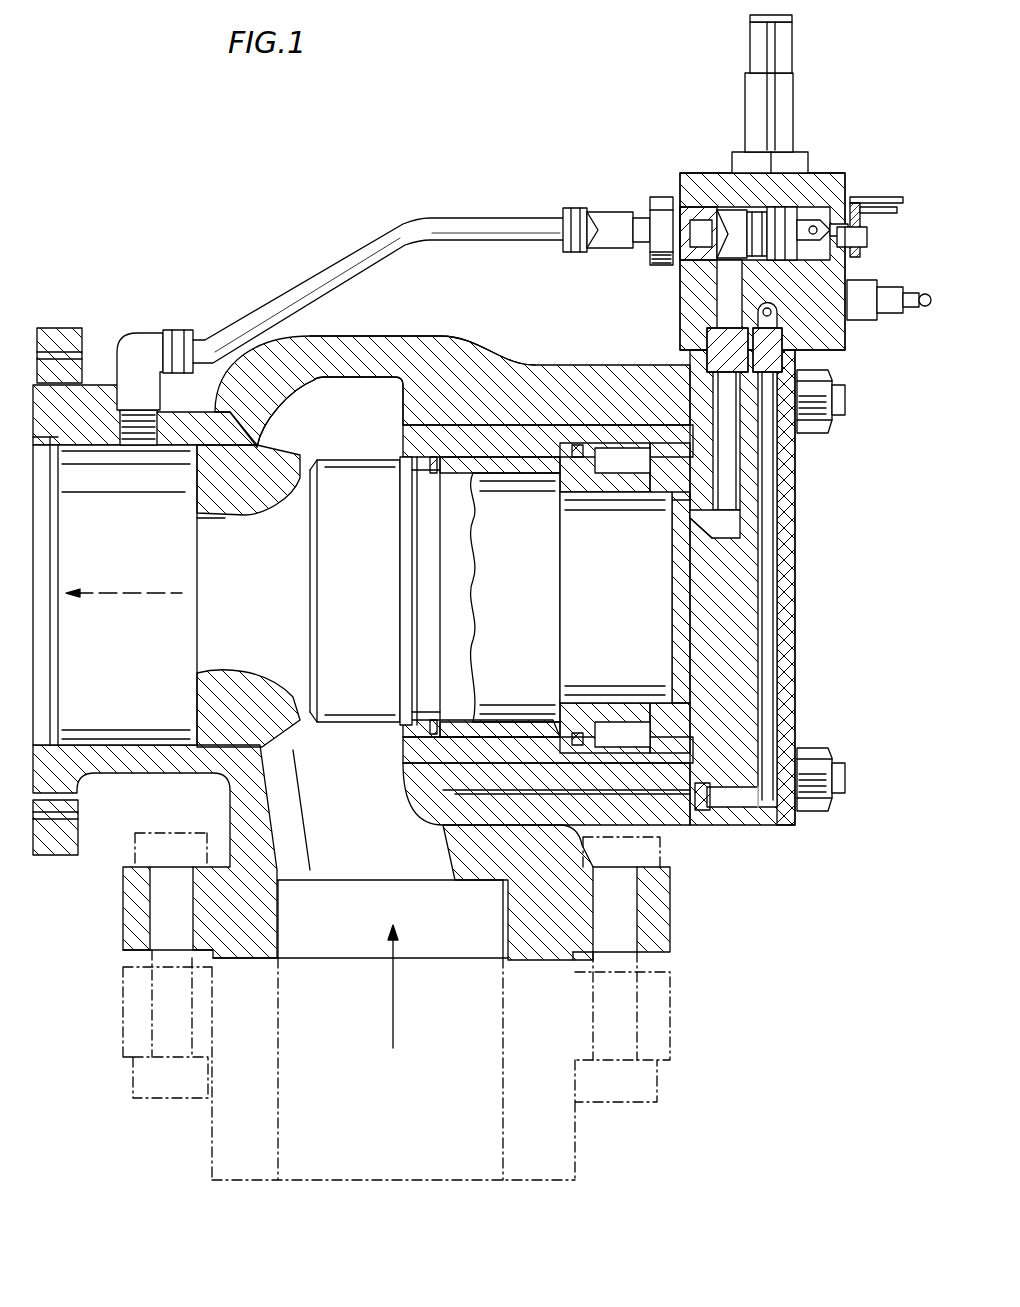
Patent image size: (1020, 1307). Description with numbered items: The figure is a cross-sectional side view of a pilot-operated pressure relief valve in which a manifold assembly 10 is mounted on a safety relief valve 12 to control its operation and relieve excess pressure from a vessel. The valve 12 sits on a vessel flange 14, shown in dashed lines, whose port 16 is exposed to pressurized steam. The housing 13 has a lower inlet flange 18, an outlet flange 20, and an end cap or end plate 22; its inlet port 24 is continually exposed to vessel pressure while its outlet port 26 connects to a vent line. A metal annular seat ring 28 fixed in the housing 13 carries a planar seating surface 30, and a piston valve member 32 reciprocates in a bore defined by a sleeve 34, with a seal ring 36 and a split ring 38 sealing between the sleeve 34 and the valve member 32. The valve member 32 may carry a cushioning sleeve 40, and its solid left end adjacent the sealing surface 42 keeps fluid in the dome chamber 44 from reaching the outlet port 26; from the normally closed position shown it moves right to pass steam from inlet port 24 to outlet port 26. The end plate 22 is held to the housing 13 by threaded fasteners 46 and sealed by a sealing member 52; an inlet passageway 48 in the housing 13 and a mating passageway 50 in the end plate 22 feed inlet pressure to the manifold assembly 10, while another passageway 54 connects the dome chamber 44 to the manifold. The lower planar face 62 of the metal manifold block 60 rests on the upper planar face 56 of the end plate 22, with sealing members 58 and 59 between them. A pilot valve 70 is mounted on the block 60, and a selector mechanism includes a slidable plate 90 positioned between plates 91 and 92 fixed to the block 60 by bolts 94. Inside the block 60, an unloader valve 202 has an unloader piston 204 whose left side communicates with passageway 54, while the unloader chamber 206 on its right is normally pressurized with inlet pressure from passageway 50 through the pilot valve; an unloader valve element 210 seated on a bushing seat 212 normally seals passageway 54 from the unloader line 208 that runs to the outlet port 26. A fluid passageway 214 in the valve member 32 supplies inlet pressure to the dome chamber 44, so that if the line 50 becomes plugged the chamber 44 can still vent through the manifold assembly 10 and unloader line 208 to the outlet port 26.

The manifold assembly 10 is at (851, 153).
The safety relief valve 12 is at (441, 304).
The housing 13 is at (517, 372).
The vessel flange 14 is at (127, 1020).
The port 16 is at (446, 1025).
The lower inlet flange 18 is at (128, 908).
The outlet flange 20 is at (59, 845).
The end cap 22 is at (783, 648).
The inlet port 24 is at (394, 868).
The outlet port 26 is at (132, 561).
The metal annular seat ring 28 is at (247, 690).
The planar seating surface 30 is at (302, 717).
The piston valve member 32 is at (372, 561).
The sleeve 34 is at (480, 435).
The seal ring 36 is at (578, 460).
The split ring 38 is at (430, 453).
The cushioning sleeve 40 is at (660, 717).
The sealing surface 42 is at (298, 567).
The dome chamber 44 is at (634, 613).
The threaded fasteners 46 is at (817, 810).
The inlet passageway 48 is at (655, 800).
The mating passageway 50 is at (767, 572).
The sealing member 52 is at (705, 810).
The passageway 54 is at (732, 490).
The upper planar face 56 is at (697, 333).
The sealing member 58 is at (845, 400).
The sealing member 59 is at (693, 360).
The manifold block 60 is at (683, 273).
The lower planar face 62 is at (843, 353).
The pilot valve 70 is at (788, 92).
The slidable plate 90 is at (878, 197).
The plate 91 is at (848, 250).
The plate 92 is at (882, 214).
The bolts 94 is at (868, 238).
The unloader valve 202 is at (718, 207).
The unloader piston 204 is at (747, 207).
The unloader chamber 206 is at (797, 220).
The unloader line 208 is at (438, 223).
The unloader valve element 210 is at (700, 203).
The bushing seat 212 is at (673, 190).
The fluid passageway 214 is at (403, 727).